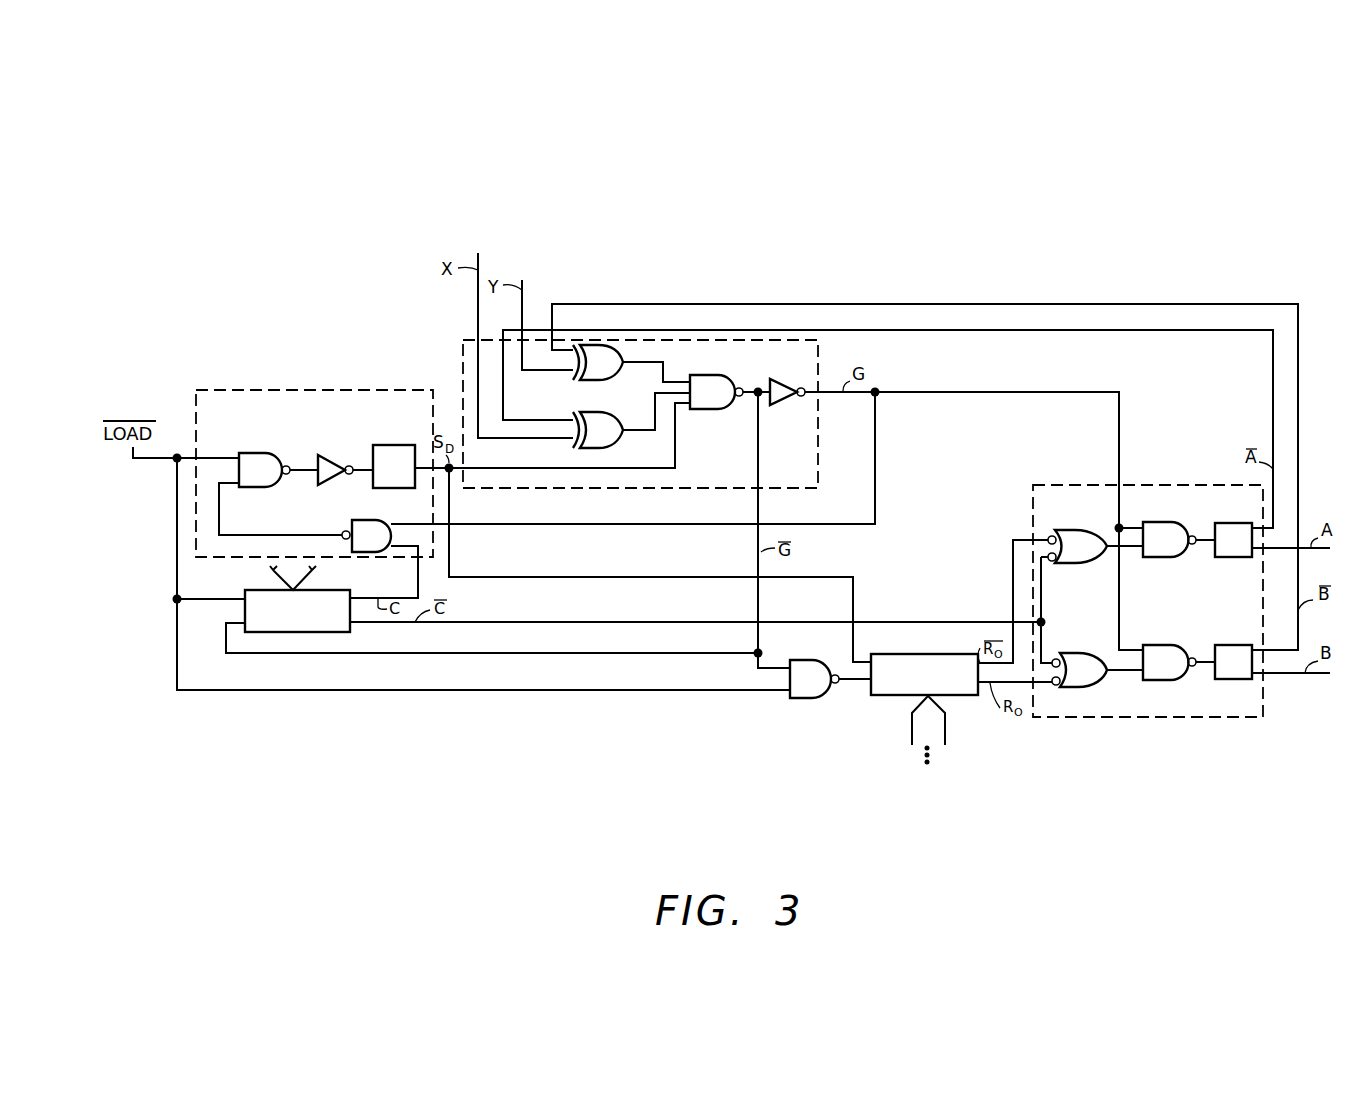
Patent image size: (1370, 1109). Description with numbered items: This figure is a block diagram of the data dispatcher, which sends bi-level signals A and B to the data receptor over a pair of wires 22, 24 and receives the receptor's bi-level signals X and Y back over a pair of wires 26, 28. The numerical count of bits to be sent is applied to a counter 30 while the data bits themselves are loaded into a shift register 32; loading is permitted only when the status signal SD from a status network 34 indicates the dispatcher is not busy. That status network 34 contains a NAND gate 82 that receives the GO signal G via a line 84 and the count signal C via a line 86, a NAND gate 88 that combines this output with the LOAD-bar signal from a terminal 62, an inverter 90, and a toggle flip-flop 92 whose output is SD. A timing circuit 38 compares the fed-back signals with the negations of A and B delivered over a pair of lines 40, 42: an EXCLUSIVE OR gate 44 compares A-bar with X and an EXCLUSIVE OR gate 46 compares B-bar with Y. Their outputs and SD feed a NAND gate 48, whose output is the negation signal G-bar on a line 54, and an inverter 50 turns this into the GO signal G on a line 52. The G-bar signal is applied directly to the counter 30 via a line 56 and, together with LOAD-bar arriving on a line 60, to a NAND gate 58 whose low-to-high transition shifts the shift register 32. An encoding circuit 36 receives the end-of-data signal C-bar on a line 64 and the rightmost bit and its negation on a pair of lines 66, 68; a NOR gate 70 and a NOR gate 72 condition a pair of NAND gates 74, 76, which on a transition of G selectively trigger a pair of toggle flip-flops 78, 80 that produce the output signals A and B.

The wire 22 is at (1330, 550).
The wire 24 is at (1310, 677).
The wire 26 is at (478, 262).
The wire 28 is at (522, 290).
The counter 30 is at (245, 592).
The shift register 32 is at (905, 654).
The status network 34 is at (393, 390).
The encoding circuit 36 is at (1090, 484).
The timing circuit 38 is at (825, 374).
The line 40 is at (970, 330).
The line 42 is at (995, 304).
The EXCLUSIVE OR gate 44 is at (573, 412).
The EXCLUSIVE OR gate 46 is at (598, 380).
The NAND gate 48 is at (710, 375).
The inverter 50 is at (796, 361).
The line 52 is at (1040, 391).
The line 54 is at (762, 598).
The line 56 is at (515, 652).
The NAND gate 58 is at (822, 660).
The line 60 is at (175, 557).
The terminal 62 is at (152, 465).
The line 64 is at (645, 621).
The line 66 is at (998, 683).
The line 68 is at (1013, 569).
The NOR gate 70 is at (1090, 654).
The NOR gate 72 is at (1092, 531).
The NAND gate 74 is at (1165, 645).
The NAND gate 76 is at (1165, 522).
The toggle flip-flop 78 is at (1235, 645).
The toggle flip-flop 80 is at (1235, 523).
The NAND gate 82 is at (360, 520).
The line 84 is at (572, 524).
The line 86 is at (418, 575).
The NAND gate 88 is at (258, 453).
The inverter 90 is at (338, 455).
The toggle flip-flop 92 is at (405, 445).